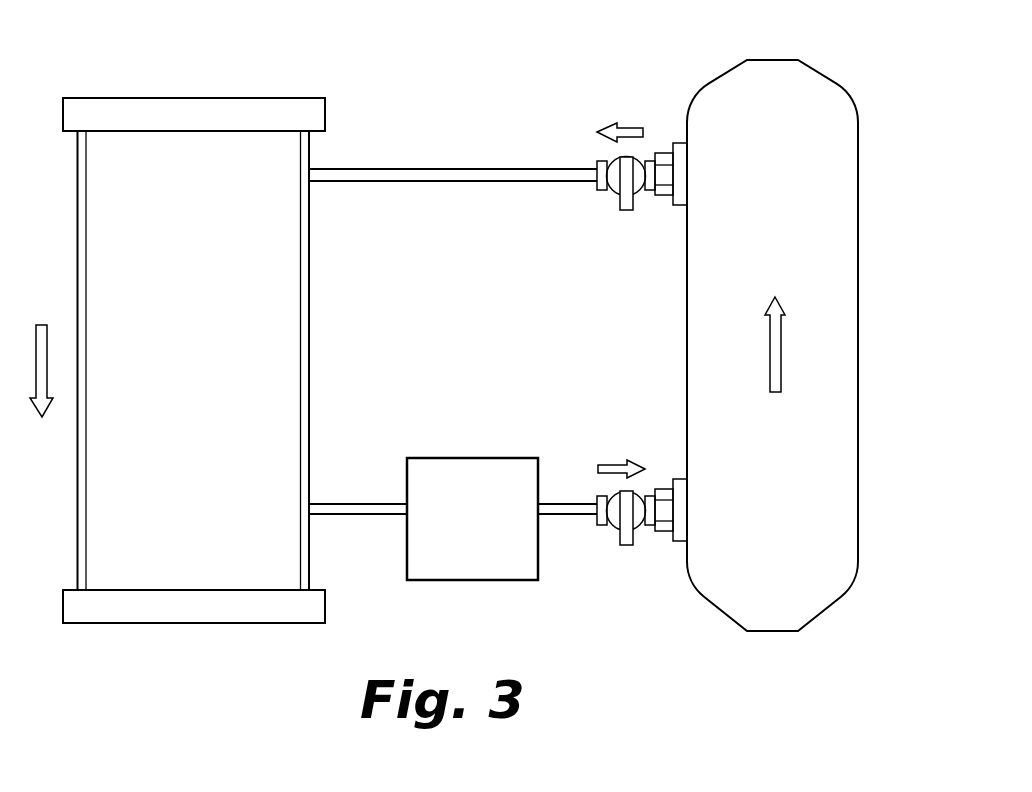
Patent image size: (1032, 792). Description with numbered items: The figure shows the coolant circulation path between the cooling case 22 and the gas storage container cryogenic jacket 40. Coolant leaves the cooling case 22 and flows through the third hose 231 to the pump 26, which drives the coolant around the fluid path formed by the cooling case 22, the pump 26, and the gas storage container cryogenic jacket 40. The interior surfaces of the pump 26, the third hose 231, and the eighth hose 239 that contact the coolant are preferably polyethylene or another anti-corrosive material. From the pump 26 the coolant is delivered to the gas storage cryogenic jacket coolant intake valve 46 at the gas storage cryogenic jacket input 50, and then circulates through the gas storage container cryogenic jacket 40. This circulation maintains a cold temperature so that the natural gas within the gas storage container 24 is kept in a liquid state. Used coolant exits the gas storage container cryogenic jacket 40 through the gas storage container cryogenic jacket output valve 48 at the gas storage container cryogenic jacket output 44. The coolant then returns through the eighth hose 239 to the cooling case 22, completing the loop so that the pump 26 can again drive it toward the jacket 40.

The cooling case 22 is at (186, 78).
The gas storage container 24 is at (805, 326).
The pump 26 is at (473, 457).
The gas storage container cryogenic jacket 40 is at (812, 112).
The gas storage container cryogenic jacket output 44 is at (636, 121).
The gas storage cryogenic jacket coolant intake valve 46 is at (626, 546).
The gas storage container cryogenic jacket output valve 48 is at (626, 211).
The gas storage cryogenic jacket input 50 is at (613, 459).
The third hose 231 is at (366, 502).
The eighth hose 239 is at (408, 168).